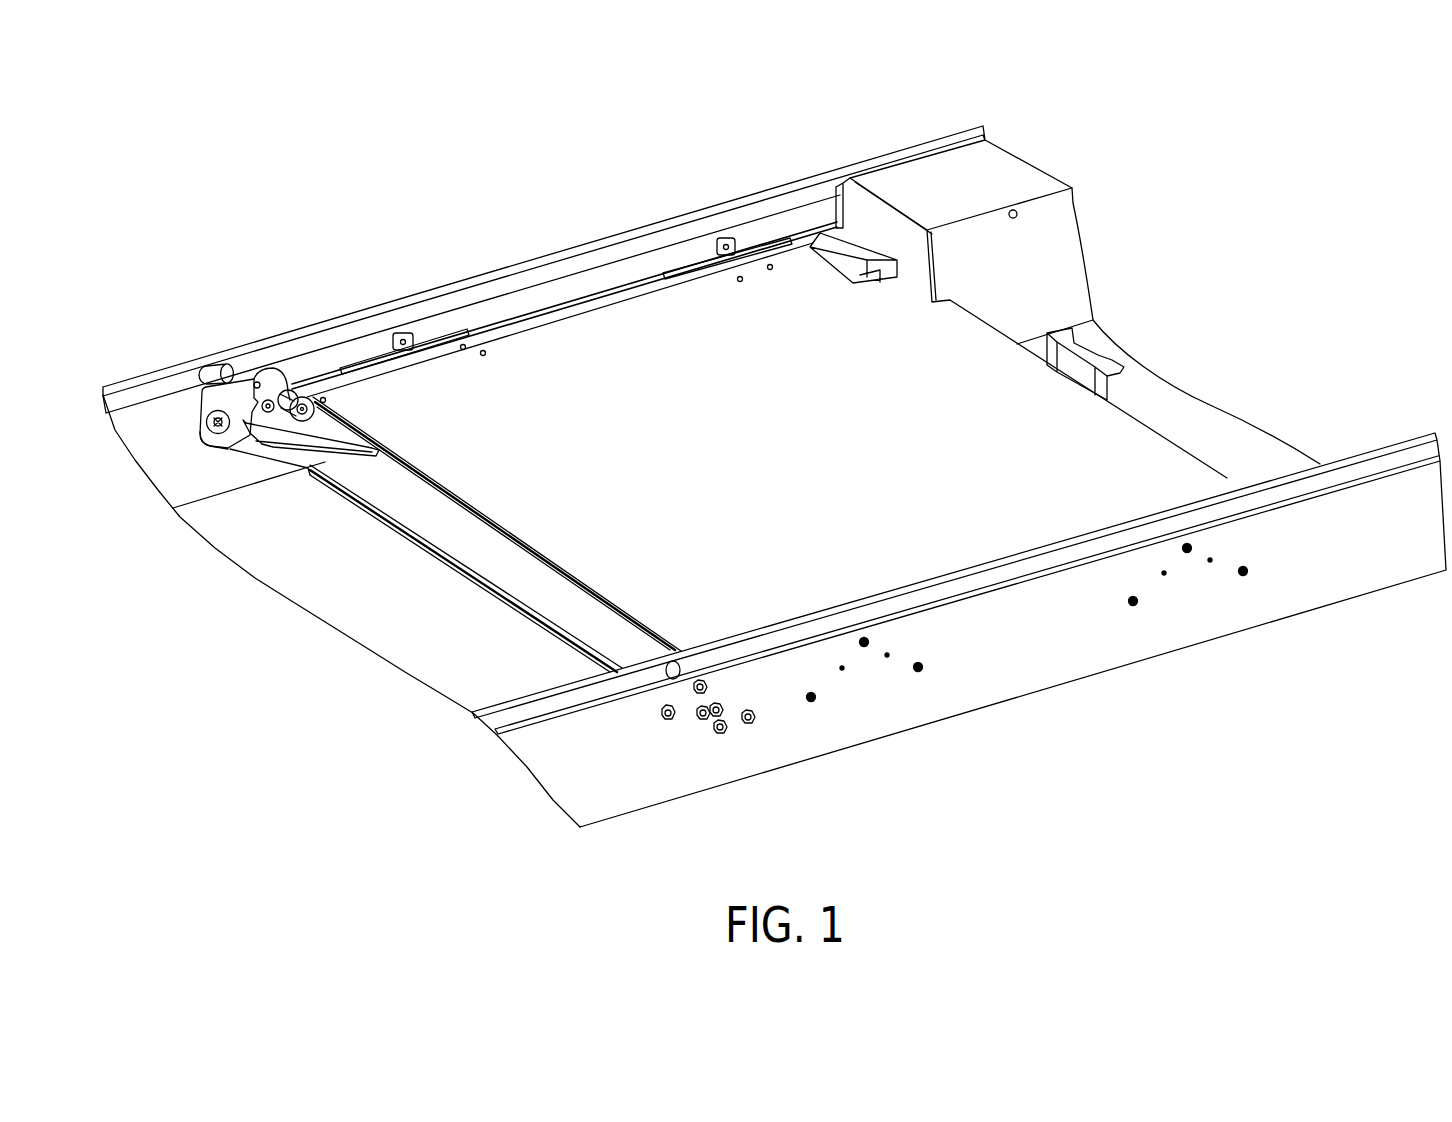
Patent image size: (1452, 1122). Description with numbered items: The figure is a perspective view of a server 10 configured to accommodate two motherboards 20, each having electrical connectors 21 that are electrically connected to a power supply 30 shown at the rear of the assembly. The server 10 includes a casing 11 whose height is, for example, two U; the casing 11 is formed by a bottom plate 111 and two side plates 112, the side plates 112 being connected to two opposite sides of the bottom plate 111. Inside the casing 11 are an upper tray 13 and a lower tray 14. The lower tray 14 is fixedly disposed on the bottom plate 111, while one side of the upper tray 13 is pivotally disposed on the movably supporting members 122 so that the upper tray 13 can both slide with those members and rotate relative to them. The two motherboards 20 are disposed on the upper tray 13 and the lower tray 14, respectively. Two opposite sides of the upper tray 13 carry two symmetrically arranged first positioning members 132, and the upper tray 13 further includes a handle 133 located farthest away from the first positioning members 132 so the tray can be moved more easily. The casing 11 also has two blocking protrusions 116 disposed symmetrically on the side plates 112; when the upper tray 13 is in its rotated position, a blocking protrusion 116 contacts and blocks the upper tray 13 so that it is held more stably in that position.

The server 10 is at (222, 88).
The casing 11 is at (1112, 688).
The upper tray 13 is at (278, 427).
The lower tray 14 is at (407, 550).
The motherboard 20 is at (627, 347).
The electrical connector 21 is at (851, 248).
The power supply 30 is at (951, 176).
The bottom plate 111 is at (313, 570).
The side plate 112 is at (173, 449).
The blocking protrusion 116 is at (217, 363).
The movably supporting member 122 is at (243, 458).
The first positioning member 132 is at (302, 396).
The handle 133 is at (1087, 352).